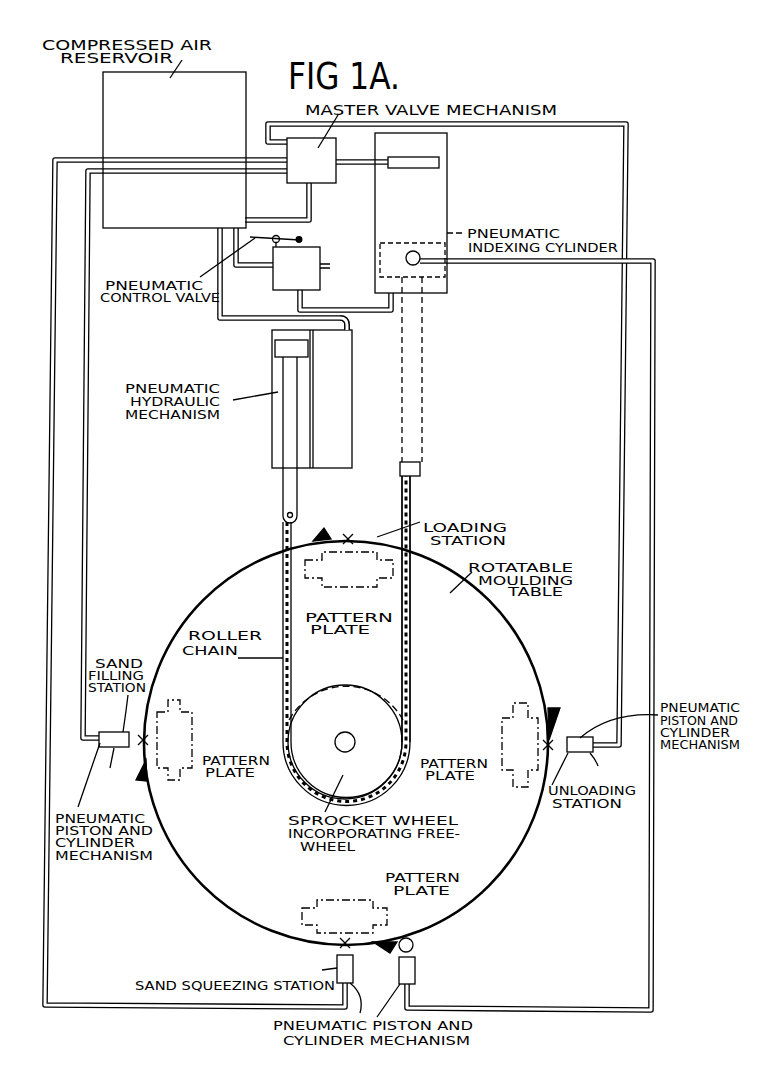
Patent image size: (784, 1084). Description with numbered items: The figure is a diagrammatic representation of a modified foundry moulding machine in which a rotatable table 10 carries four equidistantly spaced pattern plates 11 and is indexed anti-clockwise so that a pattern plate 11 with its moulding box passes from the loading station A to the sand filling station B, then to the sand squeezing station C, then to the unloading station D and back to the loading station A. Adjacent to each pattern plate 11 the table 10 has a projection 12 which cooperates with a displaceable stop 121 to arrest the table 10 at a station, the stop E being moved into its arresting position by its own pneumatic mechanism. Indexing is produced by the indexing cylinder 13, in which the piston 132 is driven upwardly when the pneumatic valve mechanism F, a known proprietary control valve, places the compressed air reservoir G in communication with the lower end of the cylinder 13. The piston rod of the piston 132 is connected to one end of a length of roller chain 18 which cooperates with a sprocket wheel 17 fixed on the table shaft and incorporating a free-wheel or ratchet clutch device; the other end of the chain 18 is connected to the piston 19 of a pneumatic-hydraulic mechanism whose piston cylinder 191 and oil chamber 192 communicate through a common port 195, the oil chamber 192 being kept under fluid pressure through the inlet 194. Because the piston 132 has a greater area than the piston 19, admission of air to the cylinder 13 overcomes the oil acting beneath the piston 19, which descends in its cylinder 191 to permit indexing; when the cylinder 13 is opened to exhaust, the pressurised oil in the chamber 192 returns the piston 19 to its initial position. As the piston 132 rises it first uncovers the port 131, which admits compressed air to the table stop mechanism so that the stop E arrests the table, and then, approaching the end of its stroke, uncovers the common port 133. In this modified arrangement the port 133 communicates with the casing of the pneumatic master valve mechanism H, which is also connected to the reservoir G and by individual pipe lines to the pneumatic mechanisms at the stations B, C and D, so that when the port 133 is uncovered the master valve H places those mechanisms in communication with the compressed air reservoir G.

The rotatable table 10 is at (498, 618).
The pattern plate 11 is at (350, 588).
The projection 12 is at (325, 532).
The indexing cylinder 13 is at (450, 210).
The sprocket wheel 17 is at (360, 703).
The roller chain 18 is at (417, 492).
The piston 19 is at (313, 420).
The displaceable stop 121 is at (414, 945).
The port 131 is at (420, 262).
The piston 132 is at (400, 243).
The common port 133 is at (412, 169).
The piston cylinder 191 is at (270, 418).
The oil chamber 192 is at (340, 437).
The inlet 194 is at (348, 327).
The common port 195 is at (311, 463).
The loading station A is at (367, 523).
The sand filling station B is at (114, 745).
The sand squeezing station C is at (330, 965).
The unloading station D is at (588, 759).
The stop E is at (416, 968).
The pneumatic valve mechanism F is at (322, 257).
The compressed air reservoir G is at (174, 150).
The pneumatic master valve mechanism H is at (311, 160).